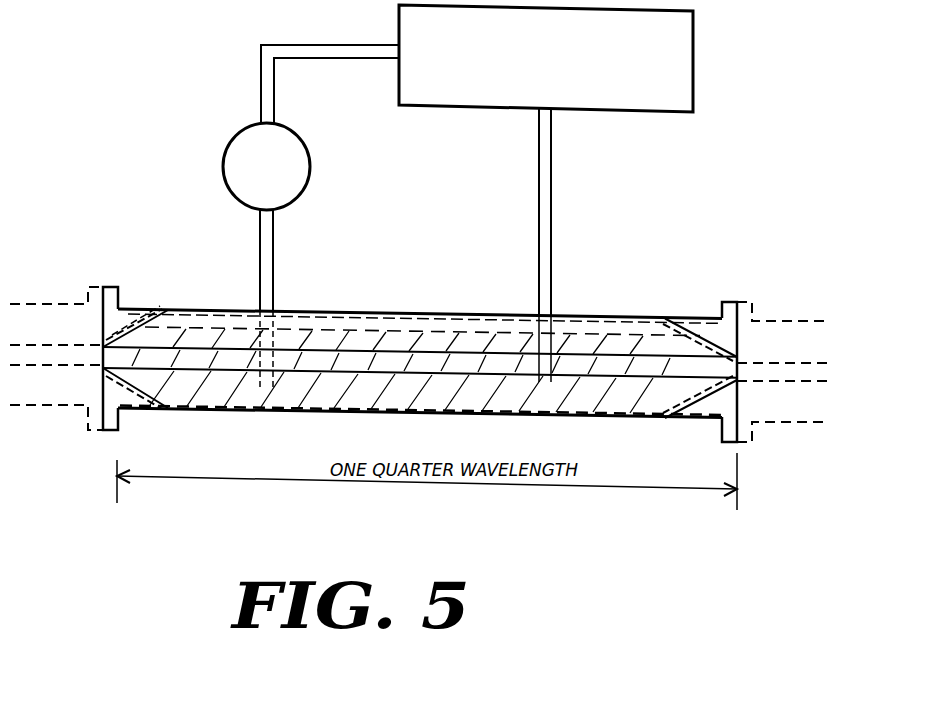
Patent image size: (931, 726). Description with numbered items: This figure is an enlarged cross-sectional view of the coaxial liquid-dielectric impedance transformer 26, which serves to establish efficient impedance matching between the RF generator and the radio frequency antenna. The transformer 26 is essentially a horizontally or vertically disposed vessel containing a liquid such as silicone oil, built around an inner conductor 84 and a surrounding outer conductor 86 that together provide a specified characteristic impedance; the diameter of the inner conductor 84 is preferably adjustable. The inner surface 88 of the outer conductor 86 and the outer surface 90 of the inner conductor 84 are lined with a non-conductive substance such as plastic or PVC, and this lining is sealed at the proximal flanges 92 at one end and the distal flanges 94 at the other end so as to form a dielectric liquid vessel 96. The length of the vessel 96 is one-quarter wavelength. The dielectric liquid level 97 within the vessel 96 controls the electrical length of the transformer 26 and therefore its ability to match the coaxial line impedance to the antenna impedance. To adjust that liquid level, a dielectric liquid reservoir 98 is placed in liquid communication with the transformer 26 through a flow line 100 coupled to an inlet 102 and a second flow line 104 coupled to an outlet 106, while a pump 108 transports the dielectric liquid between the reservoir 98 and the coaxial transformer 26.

The coaxial liquid-dielectric impedance transformer 26 is at (577, 286).
The inner conductor 84 is at (430, 346).
The outer conductor 86 is at (618, 316).
The inner surface 88 is at (298, 315).
The outer surface 90 is at (300, 377).
The proximal flanges 92 is at (132, 318).
The distal flanges 94 is at (710, 337).
The dielectric liquid vessel 96 is at (150, 306).
The dielectric liquid level 97 is at (353, 327).
The dielectric liquid reservoir 98 is at (668, 73).
The flow line 100 is at (250, 87).
The inlet 102 is at (249, 303).
The flow line 104 is at (555, 186).
The outlet 106 is at (530, 309).
The pump 108 is at (286, 180).